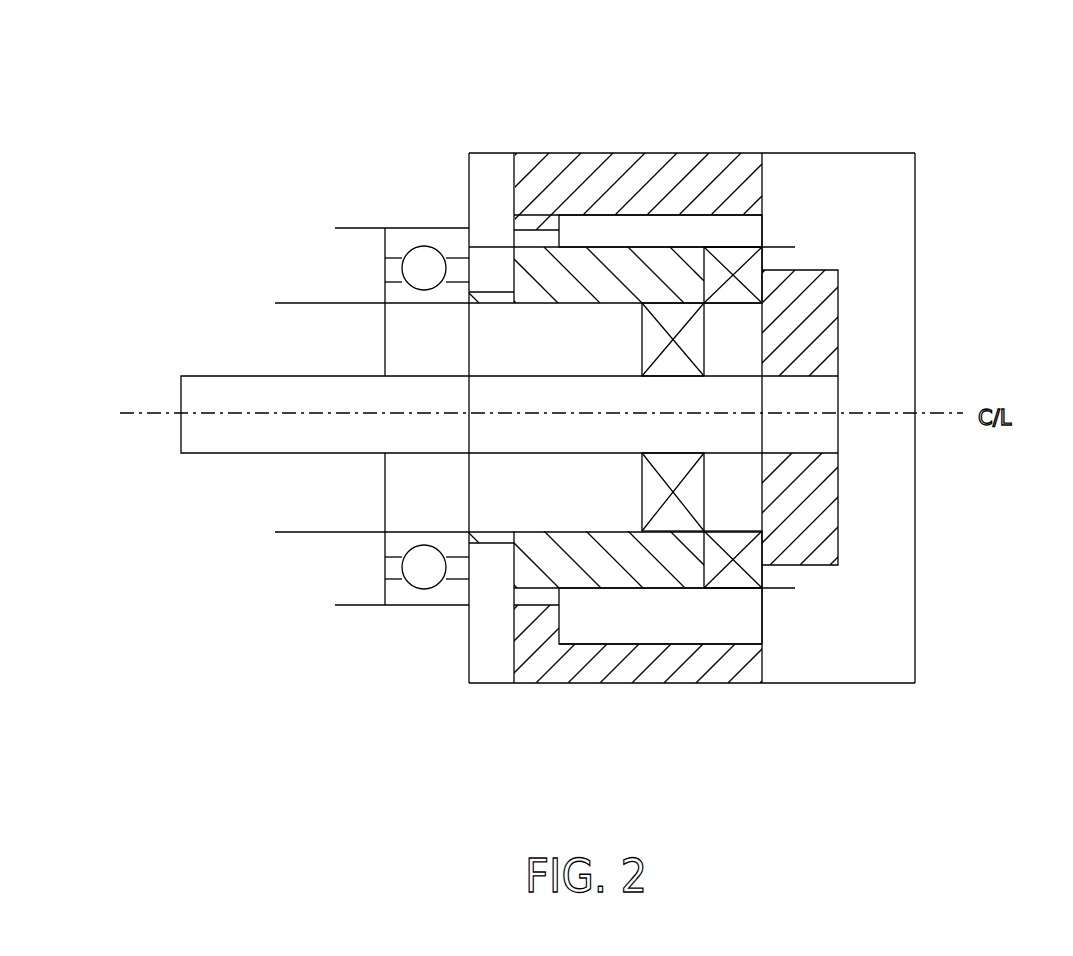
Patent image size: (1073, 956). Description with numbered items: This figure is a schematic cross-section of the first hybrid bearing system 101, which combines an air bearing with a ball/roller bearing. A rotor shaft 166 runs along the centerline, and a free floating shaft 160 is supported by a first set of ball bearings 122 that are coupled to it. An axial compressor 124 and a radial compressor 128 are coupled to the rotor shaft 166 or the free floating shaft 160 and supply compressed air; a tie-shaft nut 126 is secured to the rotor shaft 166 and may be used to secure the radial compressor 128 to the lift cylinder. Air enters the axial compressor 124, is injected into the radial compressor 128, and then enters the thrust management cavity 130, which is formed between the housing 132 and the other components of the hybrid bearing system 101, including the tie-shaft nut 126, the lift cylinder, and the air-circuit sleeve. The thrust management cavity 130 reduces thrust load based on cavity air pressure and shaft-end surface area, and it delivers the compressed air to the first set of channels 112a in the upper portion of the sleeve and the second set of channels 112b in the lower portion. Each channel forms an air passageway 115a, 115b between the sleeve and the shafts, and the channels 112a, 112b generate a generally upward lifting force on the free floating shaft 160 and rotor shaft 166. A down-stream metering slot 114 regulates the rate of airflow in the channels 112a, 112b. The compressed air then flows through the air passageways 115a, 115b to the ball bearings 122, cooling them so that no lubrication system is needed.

The first hybrid bearing system 101 is at (998, 140).
The first set of channels 112a is at (637, 222).
The second set of channels 112b is at (643, 625).
The down-stream metering slot 114 is at (537, 240).
The air passageway 115a is at (720, 220).
The air passageway 115b is at (727, 623).
The ball bearings 122 is at (428, 242).
The axial compressor 124 is at (665, 518).
The tie-shaft nut 126 is at (845, 302).
The radial compressor 128 is at (737, 257).
The thrust management cavity 130 is at (893, 627).
The housing 132 is at (920, 516).
The free floating shaft 160 is at (303, 298).
The rotor shaft 166 is at (205, 458).